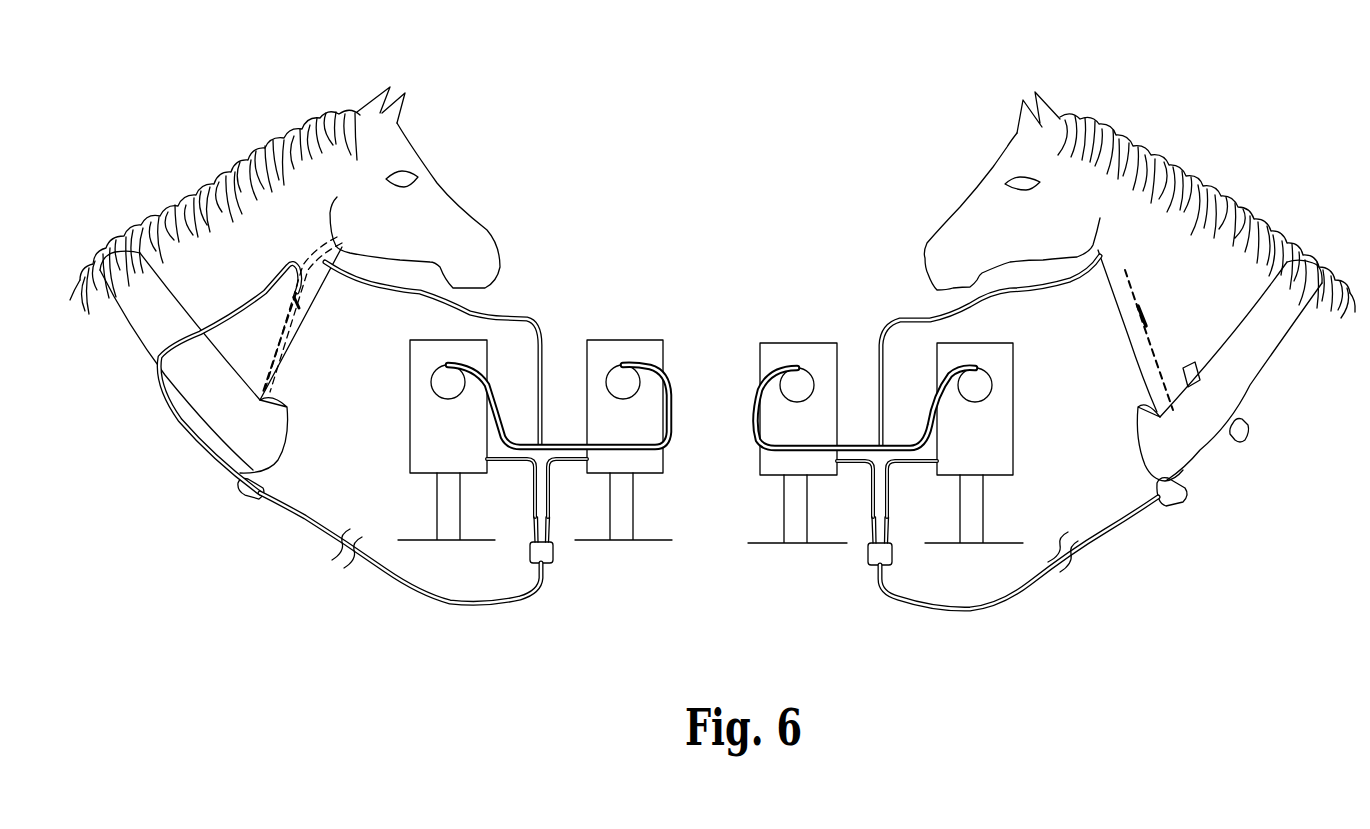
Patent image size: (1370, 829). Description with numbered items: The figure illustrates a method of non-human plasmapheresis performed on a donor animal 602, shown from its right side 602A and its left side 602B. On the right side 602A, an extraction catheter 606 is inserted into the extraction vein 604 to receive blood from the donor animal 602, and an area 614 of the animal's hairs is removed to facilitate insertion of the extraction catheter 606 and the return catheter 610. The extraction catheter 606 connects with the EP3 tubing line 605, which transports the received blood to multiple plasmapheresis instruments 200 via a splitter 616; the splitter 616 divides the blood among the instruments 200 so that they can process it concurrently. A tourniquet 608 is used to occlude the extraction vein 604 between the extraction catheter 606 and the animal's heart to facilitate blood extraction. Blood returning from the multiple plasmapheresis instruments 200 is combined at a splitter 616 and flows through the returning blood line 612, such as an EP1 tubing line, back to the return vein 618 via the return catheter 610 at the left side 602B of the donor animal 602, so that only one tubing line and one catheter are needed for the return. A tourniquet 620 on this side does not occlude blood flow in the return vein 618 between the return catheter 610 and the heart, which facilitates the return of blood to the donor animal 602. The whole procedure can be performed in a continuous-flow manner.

The donor animal 602 is at (264, 153).
The right side of the donor animal 602A is at (427, 232).
The left side of the donor animal 602B is at (1050, 235).
The area of removed hairs 614 is at (258, 292).
The extraction catheter 606 is at (287, 295).
The extraction vein 604 is at (270, 336).
The tourniquet 608 is at (263, 450).
The EP3 tubing line 605 is at (288, 508).
The returning blood line 612 is at (507, 312).
The plasmapheresis instrument 200 is at (466, 440).
The splitter 616 is at (547, 553).
The return catheter 610 is at (1130, 306).
The return vein 618 is at (1157, 340).
The tourniquet 620 is at (1244, 421).